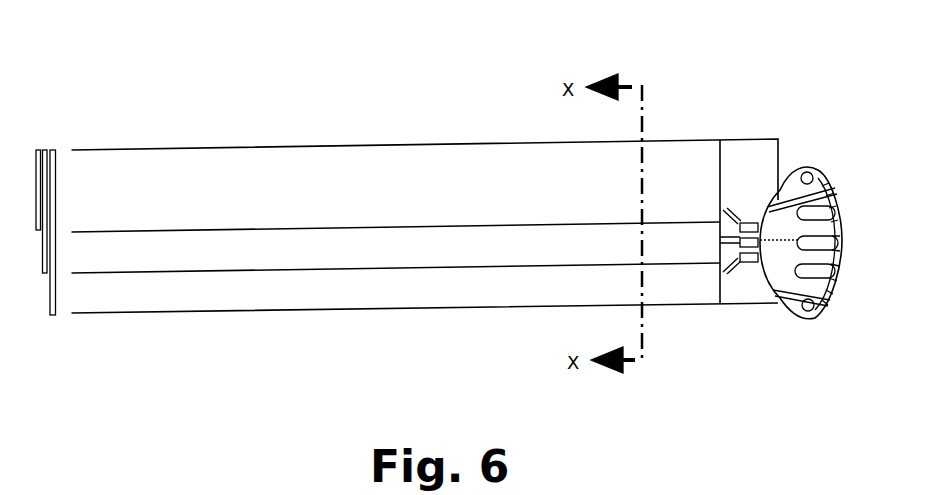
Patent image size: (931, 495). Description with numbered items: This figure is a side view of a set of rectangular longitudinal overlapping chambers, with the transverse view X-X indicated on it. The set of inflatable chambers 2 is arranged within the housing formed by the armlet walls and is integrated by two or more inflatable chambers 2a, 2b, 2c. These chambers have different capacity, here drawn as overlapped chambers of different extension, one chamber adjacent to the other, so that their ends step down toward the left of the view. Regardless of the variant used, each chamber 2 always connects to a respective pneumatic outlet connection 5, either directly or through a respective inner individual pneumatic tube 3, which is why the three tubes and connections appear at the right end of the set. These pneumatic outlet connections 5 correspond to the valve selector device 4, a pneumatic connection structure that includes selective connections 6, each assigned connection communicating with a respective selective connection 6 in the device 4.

The set of inflatable chambers 2 is at (770, 138).
The inflatable chamber 2a is at (36, 148).
The inflatable chamber 2b is at (43, 148).
The inflatable chamber 2c is at (53, 148).
The inner individual pneumatic tube 3 is at (731, 284).
The valve selector device 4 is at (786, 217).
The pneumatic outlet connection 5 is at (753, 273).
The selective connection 6 is at (838, 184).